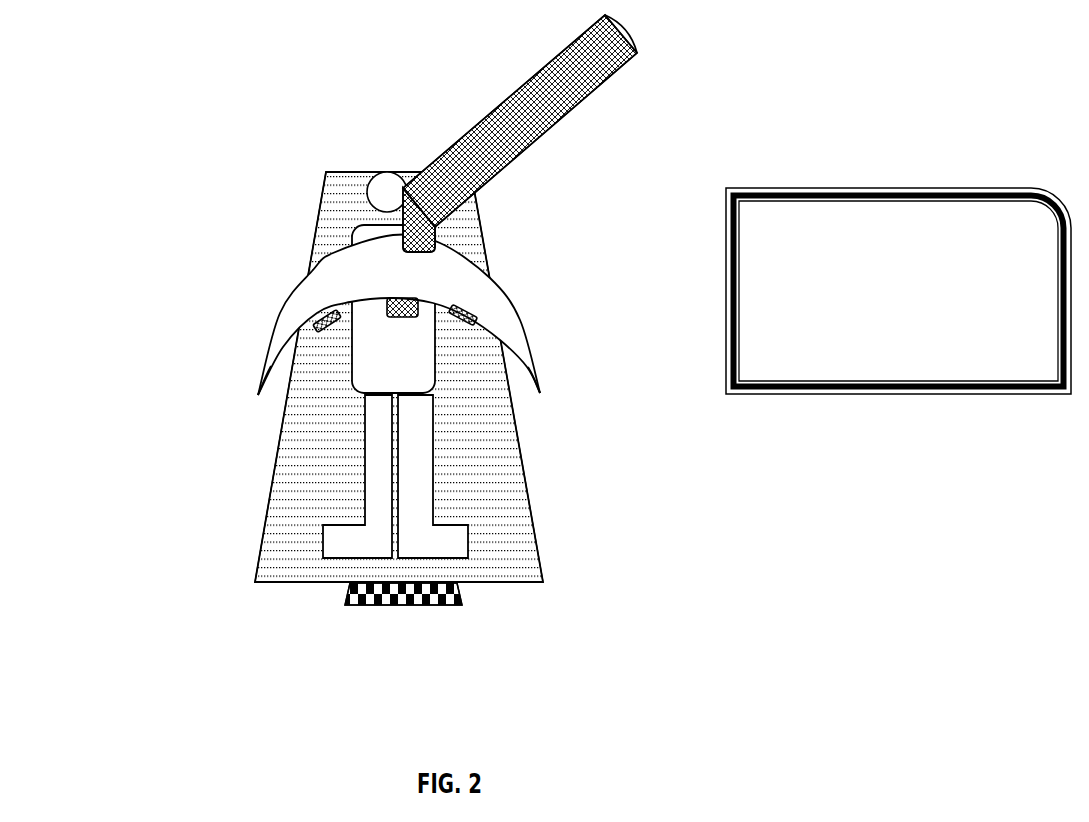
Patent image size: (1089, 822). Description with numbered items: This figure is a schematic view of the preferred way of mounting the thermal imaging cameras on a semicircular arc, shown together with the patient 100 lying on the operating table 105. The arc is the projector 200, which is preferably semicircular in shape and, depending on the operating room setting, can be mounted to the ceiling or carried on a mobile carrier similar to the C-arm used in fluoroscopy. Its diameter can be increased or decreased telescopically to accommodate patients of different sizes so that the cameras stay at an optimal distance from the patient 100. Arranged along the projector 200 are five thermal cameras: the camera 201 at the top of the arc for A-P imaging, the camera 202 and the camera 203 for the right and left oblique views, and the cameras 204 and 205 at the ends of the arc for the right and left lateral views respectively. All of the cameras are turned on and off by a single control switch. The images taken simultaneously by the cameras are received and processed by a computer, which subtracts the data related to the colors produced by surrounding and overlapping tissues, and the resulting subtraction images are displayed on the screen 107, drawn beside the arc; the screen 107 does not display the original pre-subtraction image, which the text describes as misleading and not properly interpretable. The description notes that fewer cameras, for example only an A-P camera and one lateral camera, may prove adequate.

The patient 100 is at (365, 537).
The operating table 105 is at (502, 562).
The screen 107 is at (828, 260).
The projector 200 is at (478, 282).
The camera 201 is at (363, 302).
The camera 202 is at (338, 330).
The camera 203 is at (450, 308).
The camera 204 is at (260, 378).
The camera 205 is at (507, 350).